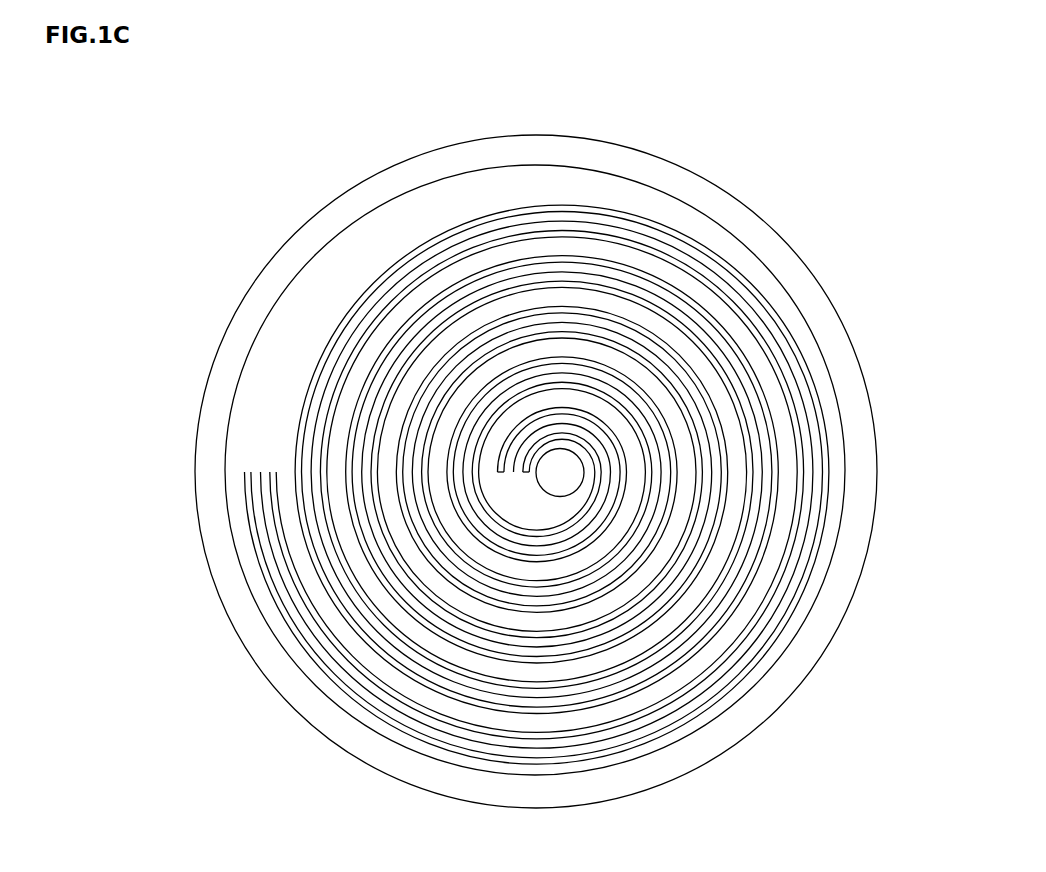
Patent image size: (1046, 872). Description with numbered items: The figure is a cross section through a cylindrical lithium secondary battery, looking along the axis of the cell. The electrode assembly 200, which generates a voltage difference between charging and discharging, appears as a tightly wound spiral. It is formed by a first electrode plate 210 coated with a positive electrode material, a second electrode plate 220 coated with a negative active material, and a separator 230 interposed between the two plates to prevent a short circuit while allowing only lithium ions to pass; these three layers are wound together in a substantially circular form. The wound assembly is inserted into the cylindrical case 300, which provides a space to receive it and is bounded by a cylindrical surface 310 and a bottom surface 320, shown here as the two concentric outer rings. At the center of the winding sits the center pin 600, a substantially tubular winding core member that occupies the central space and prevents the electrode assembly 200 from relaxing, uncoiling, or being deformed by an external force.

The electrode assembly 200 is at (128, 706).
The first electrode plate 210 is at (255, 593).
The second electrode plate 220 is at (537, 484).
The separator 230 is at (537, 484).
The cylindrical case 300 is at (245, 190).
The cylindrical surface 310 is at (388, 178).
The bottom surface 320 is at (372, 223).
The center pin 600 is at (578, 447).